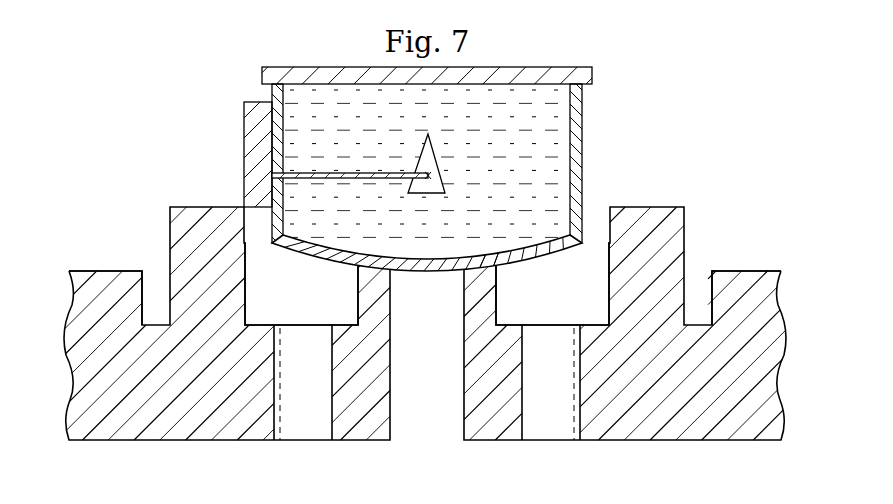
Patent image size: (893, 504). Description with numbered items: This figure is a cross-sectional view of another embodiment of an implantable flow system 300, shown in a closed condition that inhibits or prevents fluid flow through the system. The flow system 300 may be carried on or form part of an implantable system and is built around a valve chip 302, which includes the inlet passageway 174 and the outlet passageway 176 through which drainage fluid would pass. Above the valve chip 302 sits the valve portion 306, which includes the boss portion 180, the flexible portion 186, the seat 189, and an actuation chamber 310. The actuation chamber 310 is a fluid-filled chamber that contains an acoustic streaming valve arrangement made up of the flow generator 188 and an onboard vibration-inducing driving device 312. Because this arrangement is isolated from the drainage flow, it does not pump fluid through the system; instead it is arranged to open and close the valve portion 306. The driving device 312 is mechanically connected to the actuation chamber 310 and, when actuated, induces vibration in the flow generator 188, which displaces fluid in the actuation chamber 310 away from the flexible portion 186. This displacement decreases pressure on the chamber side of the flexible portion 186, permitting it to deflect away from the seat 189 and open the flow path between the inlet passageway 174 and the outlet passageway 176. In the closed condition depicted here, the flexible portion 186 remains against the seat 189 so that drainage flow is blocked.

The flow system 300 is at (430, 153).
The actuation chamber 310 is at (586, 142).
The driving device 312 is at (252, 152).
The flow generator 188 is at (446, 162).
The flexible portion 186 is at (414, 252).
The seat 189 is at (487, 263).
The valve portion 306 is at (427, 229).
The boss portion 180 is at (358, 300).
The inlet passageway 174 is at (425, 349).
The outlet passageway 176 is at (332, 417).
The valve chip 302 is at (127, 433).